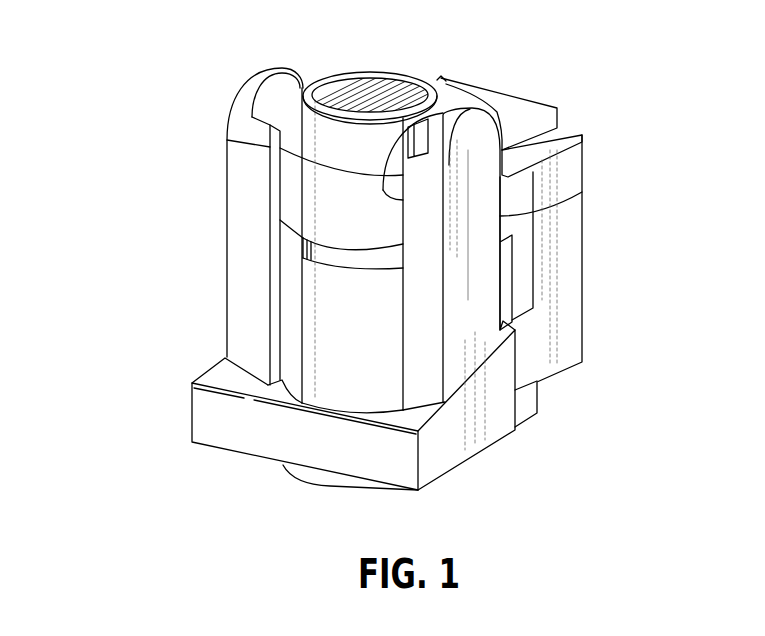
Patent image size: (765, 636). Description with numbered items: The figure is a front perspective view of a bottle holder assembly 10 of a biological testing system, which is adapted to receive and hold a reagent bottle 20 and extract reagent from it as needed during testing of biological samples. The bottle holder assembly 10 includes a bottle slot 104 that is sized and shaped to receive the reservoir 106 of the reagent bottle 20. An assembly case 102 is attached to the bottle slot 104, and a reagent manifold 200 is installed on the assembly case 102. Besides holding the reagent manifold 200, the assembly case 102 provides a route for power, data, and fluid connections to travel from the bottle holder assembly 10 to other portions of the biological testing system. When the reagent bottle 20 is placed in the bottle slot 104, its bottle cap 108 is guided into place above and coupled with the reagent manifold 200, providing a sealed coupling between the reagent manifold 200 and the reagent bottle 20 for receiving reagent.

The bottle holder assembly 10 is at (107, 73).
The reagent bottle 20 is at (402, 58).
The assembly case 102 is at (576, 330).
The bottle slot 104 is at (207, 409).
The reservoir 106 is at (335, 310).
The bottle cap 108 is at (362, 84).
The reagent manifold 200 is at (574, 171).